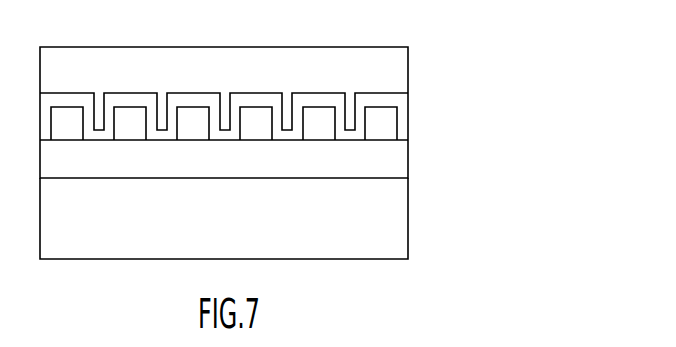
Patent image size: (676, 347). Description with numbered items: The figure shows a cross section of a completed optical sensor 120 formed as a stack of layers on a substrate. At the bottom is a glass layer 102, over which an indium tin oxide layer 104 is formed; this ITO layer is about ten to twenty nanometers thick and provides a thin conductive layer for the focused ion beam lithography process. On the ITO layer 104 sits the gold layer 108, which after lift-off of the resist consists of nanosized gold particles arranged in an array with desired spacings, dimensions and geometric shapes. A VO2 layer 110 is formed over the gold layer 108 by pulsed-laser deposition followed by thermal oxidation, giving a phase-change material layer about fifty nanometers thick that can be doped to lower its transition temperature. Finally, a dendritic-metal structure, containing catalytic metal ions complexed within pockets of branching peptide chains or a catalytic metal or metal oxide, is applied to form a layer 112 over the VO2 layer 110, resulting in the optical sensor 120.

The glass layer 102 is at (408, 220).
The indium tin oxide layer 104 is at (408, 159).
The gold layer 108 is at (397, 122).
The VO2 layer 110 is at (380, 93).
The dendritic-metal structure layer 112 is at (283, 47).
The optical sensor 120 is at (521, 113).